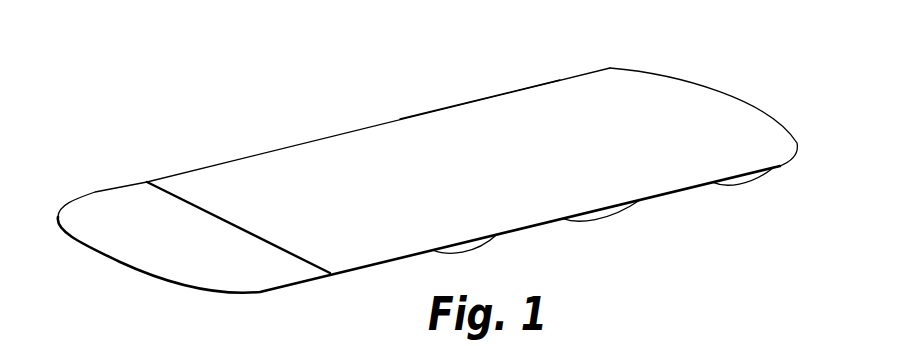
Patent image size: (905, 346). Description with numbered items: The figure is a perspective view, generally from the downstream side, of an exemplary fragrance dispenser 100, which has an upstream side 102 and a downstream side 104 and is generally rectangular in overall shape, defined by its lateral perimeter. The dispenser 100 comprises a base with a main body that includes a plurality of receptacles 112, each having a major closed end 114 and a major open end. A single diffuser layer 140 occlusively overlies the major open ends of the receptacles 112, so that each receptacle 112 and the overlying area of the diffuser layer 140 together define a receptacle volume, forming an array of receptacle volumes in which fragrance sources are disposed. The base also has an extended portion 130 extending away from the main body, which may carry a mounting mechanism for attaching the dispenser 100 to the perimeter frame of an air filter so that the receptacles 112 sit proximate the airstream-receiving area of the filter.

The fragrance dispenser 100 is at (697, 48).
The upstream side 102 is at (532, 258).
The downstream side 104 is at (315, 103).
The receptacle 112 is at (750, 173).
The major closed end 114 is at (610, 213).
The extended portion 130 is at (122, 182).
The diffuser layer 140 is at (480, 110).